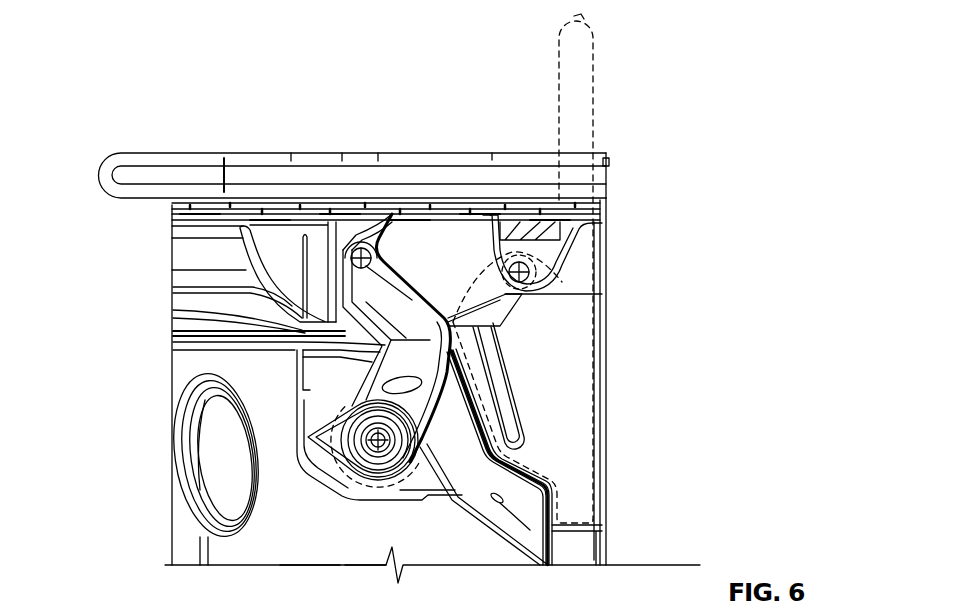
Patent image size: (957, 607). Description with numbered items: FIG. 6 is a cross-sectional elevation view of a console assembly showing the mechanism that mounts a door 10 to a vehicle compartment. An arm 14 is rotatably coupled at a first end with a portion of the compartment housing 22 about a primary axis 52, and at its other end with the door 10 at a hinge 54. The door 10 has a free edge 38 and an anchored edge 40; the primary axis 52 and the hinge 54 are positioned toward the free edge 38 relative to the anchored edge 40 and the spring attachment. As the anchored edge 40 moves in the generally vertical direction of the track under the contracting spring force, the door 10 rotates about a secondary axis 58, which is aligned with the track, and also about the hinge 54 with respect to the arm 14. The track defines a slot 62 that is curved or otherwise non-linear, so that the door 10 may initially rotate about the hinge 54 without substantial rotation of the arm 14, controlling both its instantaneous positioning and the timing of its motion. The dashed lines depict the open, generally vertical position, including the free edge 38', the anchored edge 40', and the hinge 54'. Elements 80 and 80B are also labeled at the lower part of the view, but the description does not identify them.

The door 10 is at (245, 153).
The arm 14 is at (407, 292).
The compartment housing 22 is at (320, 468).
The free edge 38 is at (320, 179).
The free edge in open position 38' is at (611, 267).
The anchored edge 40 is at (629, 345).
The anchored edge in open position 40' is at (608, 545).
The primary axis 52 is at (379, 456).
The hinge 54 is at (388, 247).
The hinge in open position 54' is at (576, 272).
The secondary axis 58 is at (493, 267).
The slot 62 is at (520, 437).
The frame member 80 is at (365, 586).
The frame member portion 80B is at (310, 586).